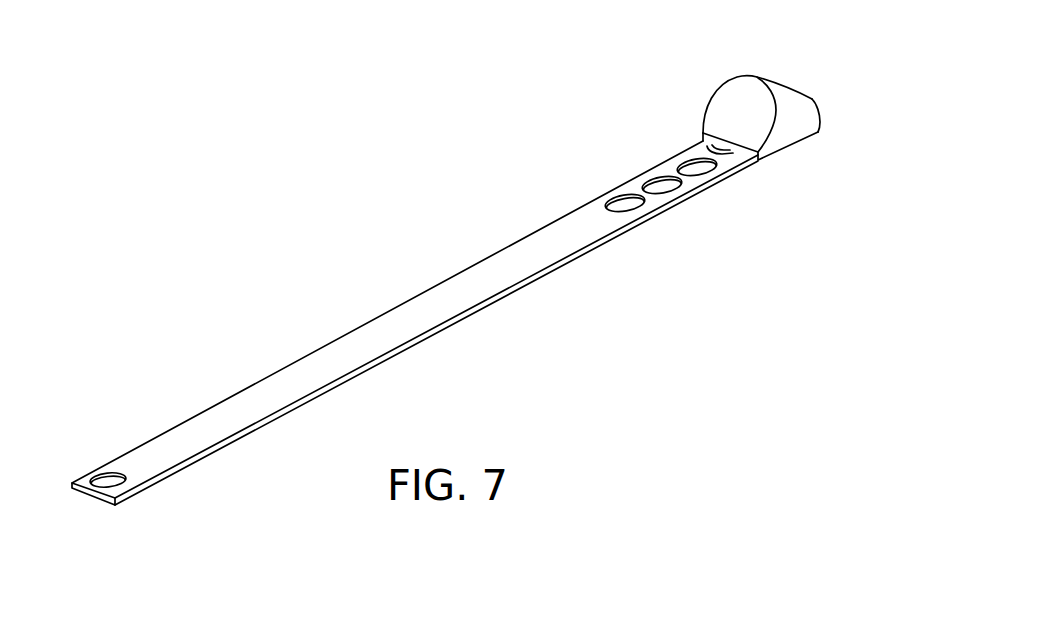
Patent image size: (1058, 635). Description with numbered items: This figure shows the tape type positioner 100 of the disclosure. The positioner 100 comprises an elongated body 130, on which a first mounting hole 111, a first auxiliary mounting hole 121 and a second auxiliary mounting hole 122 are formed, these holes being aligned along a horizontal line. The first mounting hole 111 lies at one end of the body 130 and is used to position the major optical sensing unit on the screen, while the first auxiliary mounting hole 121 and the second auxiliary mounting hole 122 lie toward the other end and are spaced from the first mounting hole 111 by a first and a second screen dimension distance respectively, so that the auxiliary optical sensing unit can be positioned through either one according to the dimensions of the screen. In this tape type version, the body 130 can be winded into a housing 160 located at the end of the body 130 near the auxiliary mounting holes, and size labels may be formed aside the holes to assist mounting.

The positioner 100 is at (128, 275).
The body 130 is at (405, 320).
The first mounting hole 111 is at (109, 482).
The first auxiliary mounting hole 121 is at (618, 205).
The second auxiliary mounting hole 122 is at (648, 178).
The housing 160 is at (732, 100).